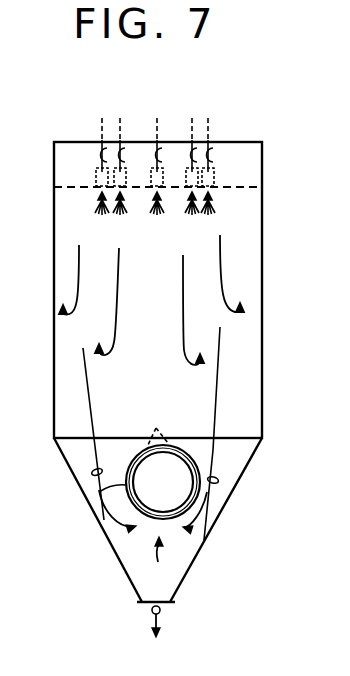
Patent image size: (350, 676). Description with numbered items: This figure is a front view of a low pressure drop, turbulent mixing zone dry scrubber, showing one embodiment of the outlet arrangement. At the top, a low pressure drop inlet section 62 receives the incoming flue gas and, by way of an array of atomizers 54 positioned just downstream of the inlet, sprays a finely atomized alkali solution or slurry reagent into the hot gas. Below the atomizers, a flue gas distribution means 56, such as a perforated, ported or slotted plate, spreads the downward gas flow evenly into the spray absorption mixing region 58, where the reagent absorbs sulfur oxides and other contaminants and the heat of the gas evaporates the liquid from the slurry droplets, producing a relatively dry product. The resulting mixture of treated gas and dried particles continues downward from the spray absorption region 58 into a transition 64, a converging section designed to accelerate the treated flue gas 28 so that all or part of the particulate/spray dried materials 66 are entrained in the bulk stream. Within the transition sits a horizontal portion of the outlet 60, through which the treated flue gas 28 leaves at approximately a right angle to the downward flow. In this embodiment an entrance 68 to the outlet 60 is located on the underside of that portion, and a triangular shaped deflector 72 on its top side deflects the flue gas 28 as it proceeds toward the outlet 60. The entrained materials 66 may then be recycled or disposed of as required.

The treated flue gas 28 is at (92, 474).
The atomizers 54 is at (150, 118).
The flue gas distribution means 56 is at (228, 188).
The spray absorption mixing region 58 is at (172, 298).
The outlet 60 is at (99, 502).
The low pressure drop inlet section 62 is at (238, 152).
The transition 64 is at (222, 510).
The particulate/spray dried materials 66 is at (160, 611).
The entrance 68 is at (159, 564).
The deflector 72 is at (154, 423).